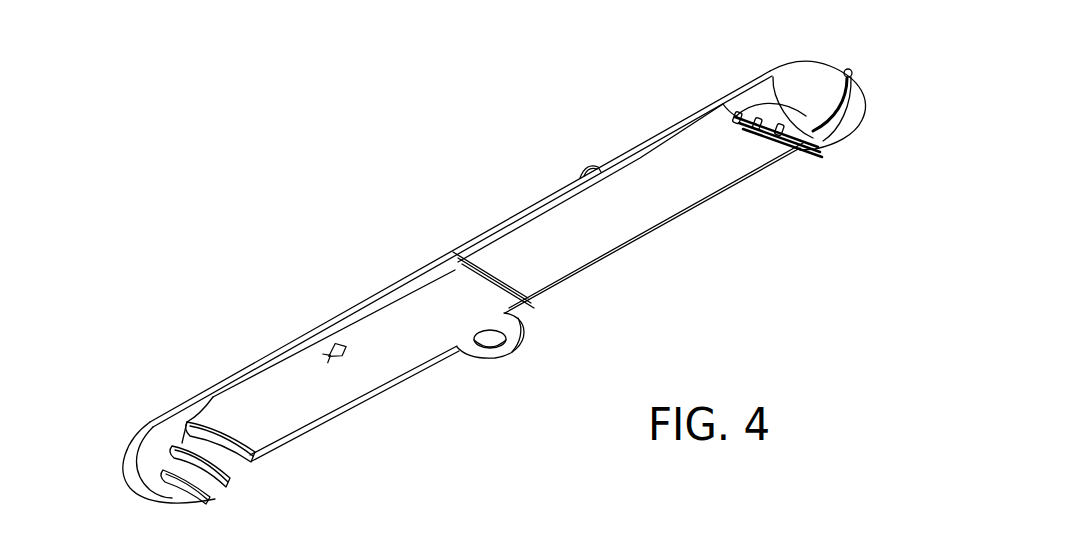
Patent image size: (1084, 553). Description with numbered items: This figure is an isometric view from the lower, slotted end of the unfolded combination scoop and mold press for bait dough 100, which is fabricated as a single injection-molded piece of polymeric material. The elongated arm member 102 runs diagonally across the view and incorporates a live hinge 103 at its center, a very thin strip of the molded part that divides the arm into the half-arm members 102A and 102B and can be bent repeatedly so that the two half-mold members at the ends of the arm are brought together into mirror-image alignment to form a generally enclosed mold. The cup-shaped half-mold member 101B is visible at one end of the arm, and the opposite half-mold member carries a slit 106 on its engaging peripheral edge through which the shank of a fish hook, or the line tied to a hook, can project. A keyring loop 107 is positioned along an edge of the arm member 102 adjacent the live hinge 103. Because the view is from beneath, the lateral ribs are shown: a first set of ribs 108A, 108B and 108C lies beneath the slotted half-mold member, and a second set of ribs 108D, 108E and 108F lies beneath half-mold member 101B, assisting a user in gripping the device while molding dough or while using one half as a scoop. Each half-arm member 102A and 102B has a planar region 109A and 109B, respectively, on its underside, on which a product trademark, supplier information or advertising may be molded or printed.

The combination scoop and mold press for bait dough 100 is at (491, 161).
The half-mold member 101B is at (150, 443).
The arm member 102 is at (559, 303).
The half-arm member 102A is at (655, 148).
The half-arm member 102B is at (330, 332).
The live hinge 103 is at (448, 249).
The slit 106 is at (850, 64).
The keyring loop 107 is at (520, 350).
The lateral rib 108A is at (806, 151).
The lateral rib 108B is at (748, 107).
The lateral rib 108C is at (740, 118).
The lateral rib 108D is at (253, 460).
The lateral rib 108E is at (228, 484).
The lateral rib 108F is at (210, 502).
The planar region 109A is at (625, 232).
The planar region 109B is at (308, 405).